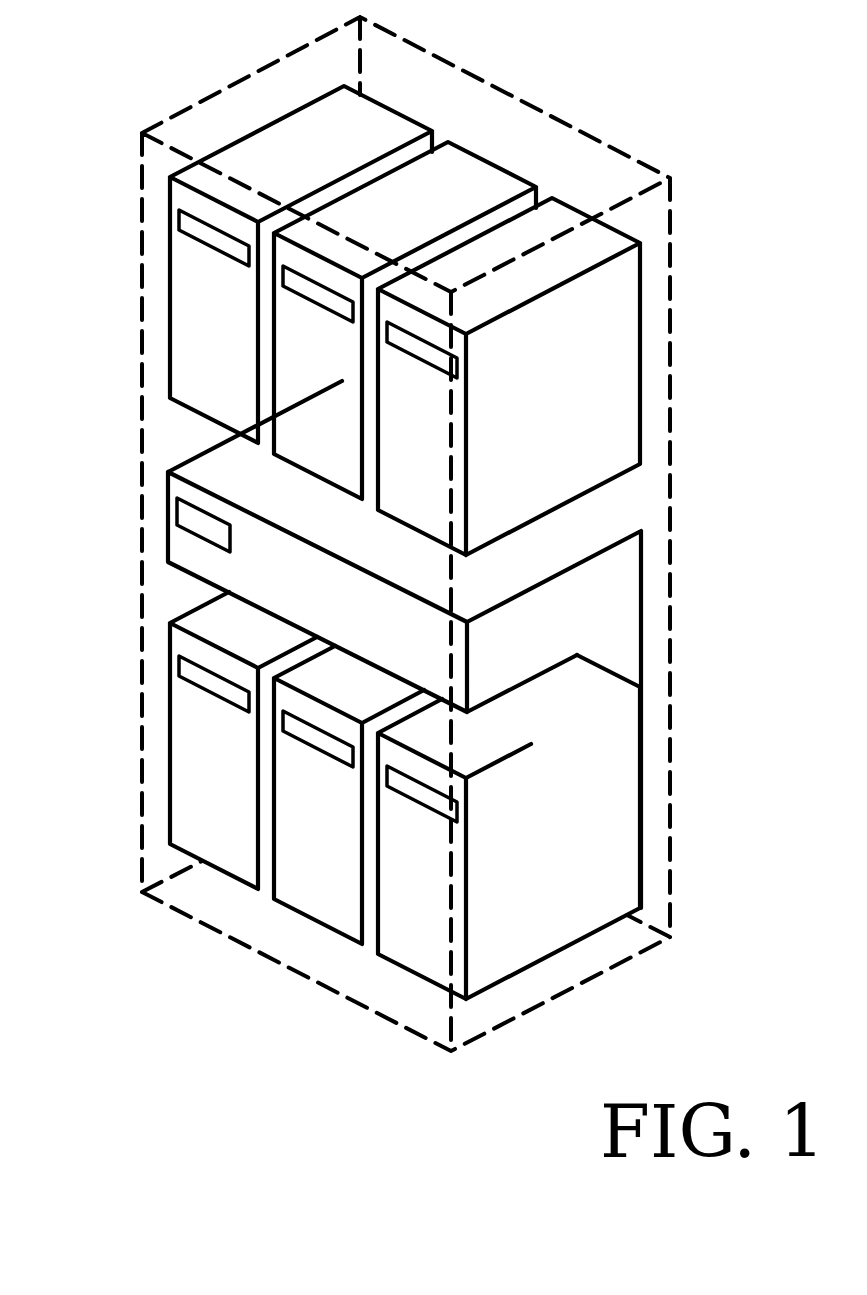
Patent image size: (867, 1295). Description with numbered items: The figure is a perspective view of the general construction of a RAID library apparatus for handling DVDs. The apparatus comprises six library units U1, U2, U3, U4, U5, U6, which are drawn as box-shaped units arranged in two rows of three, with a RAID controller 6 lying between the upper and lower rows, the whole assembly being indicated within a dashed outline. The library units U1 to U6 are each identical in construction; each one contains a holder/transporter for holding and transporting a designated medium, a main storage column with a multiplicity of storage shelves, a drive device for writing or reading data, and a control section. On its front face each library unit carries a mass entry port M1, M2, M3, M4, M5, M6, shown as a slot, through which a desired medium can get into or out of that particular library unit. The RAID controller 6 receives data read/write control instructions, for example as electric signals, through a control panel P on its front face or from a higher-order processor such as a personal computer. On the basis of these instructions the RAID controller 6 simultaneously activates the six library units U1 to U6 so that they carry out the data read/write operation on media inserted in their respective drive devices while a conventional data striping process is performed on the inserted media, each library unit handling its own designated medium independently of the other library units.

The library unit U1 is at (368, 115).
The library unit U2 is at (465, 158).
The library unit U3 is at (580, 242).
The library unit U4 is at (222, 855).
The library unit U5 is at (328, 917).
The library unit U6 is at (432, 962).
The mass entry port M1 is at (180, 218).
The mass entry port M2 is at (315, 295).
The mass entry port M3 is at (430, 357).
The mass entry port M4 is at (180, 666).
The mass entry port M5 is at (297, 733).
The mass entry port M6 is at (430, 807).
The control panel P is at (185, 517).
The RAID controller 6 is at (625, 593).